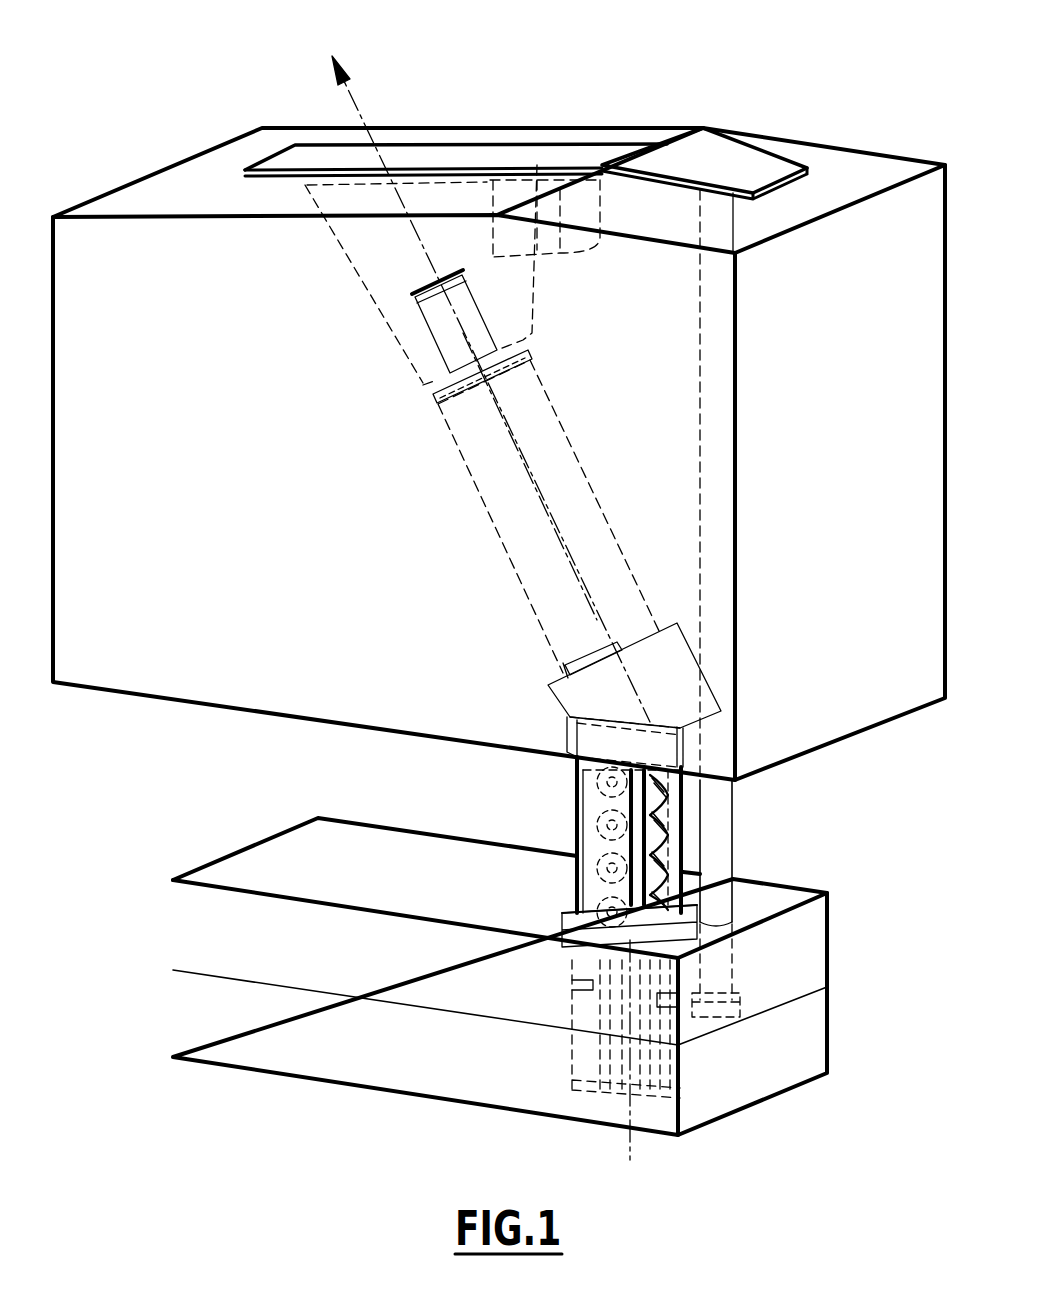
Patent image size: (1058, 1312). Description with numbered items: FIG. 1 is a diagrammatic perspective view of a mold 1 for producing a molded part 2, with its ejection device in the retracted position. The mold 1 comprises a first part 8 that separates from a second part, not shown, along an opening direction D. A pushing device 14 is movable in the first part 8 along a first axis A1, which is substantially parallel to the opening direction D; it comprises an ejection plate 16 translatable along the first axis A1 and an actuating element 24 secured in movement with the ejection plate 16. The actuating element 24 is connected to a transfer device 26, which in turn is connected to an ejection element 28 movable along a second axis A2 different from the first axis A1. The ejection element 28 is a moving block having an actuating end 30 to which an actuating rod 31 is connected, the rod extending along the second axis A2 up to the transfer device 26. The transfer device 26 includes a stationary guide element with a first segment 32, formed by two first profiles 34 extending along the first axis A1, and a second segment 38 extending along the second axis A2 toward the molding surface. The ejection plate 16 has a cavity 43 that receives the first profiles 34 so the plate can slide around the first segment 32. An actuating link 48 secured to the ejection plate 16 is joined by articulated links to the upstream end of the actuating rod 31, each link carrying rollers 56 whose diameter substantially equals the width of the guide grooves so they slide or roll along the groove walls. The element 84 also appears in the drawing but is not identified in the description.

The mold 1 is at (208, 98).
The molded part 2 is at (567, 156).
The first part 8 is at (103, 710).
The pushing device 14 is at (414, 870).
The ejection plate 16 is at (198, 1020).
The actuating element 24 is at (640, 953).
The transfer device 26 is at (565, 838).
The ejection element 28 is at (352, 242).
The actuating end 30 is at (533, 560).
The actuating rod 31 is at (483, 471).
The first segment 32 is at (590, 815).
The first profiles 34 is at (683, 877).
The second segment 38 is at (597, 553).
The cavity 43 is at (627, 1055).
The actuating link 48 is at (565, 928).
The roller 56 is at (565, 884).
The rod 84 is at (713, 447).
The first axis A1 is at (625, 1132).
The second axis A2 is at (356, 113).
The opening direction D is at (118, 80).